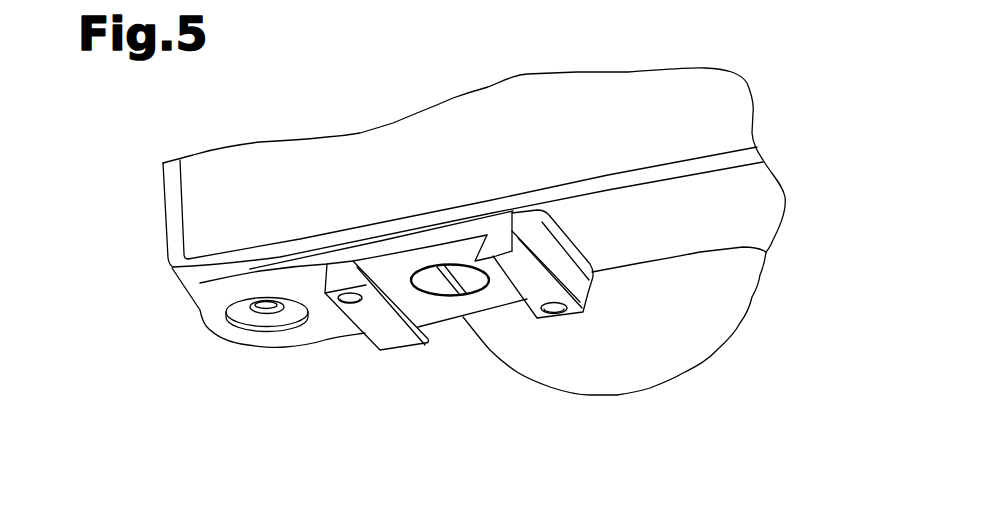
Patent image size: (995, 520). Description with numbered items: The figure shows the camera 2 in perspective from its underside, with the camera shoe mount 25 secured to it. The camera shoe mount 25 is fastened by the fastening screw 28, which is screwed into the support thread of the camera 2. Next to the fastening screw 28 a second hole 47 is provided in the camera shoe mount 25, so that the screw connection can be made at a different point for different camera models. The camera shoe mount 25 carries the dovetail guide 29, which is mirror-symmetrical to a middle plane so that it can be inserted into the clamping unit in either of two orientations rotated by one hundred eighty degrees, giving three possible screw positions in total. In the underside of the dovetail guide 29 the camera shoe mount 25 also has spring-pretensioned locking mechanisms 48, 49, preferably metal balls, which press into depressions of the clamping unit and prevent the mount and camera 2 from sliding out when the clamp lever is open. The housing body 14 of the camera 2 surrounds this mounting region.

The camera 2 is at (140, 143).
The housing body 14 is at (776, 299).
The camera shoe mount 25 is at (184, 337).
The fastening screw 28 is at (422, 250).
The dovetail guide 29 is at (357, 362).
The second hole 47 is at (255, 345).
The locking mechanism 48 is at (368, 316).
The locking mechanism 49 is at (523, 320).